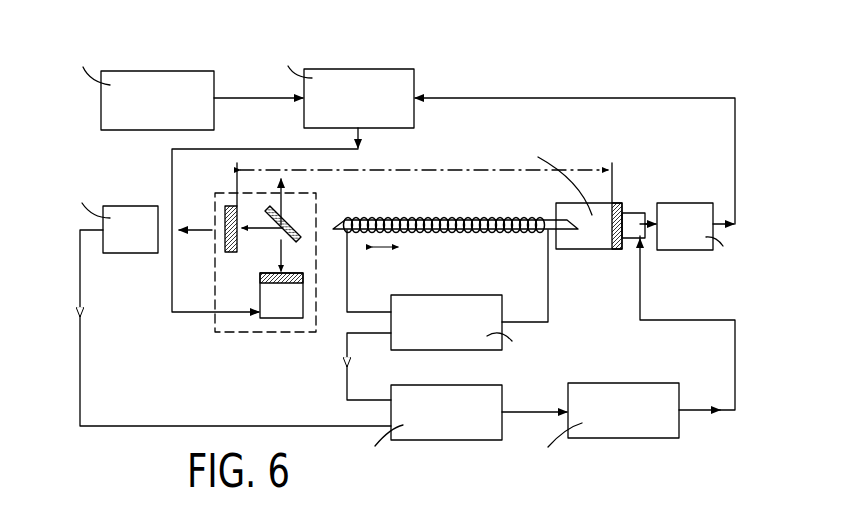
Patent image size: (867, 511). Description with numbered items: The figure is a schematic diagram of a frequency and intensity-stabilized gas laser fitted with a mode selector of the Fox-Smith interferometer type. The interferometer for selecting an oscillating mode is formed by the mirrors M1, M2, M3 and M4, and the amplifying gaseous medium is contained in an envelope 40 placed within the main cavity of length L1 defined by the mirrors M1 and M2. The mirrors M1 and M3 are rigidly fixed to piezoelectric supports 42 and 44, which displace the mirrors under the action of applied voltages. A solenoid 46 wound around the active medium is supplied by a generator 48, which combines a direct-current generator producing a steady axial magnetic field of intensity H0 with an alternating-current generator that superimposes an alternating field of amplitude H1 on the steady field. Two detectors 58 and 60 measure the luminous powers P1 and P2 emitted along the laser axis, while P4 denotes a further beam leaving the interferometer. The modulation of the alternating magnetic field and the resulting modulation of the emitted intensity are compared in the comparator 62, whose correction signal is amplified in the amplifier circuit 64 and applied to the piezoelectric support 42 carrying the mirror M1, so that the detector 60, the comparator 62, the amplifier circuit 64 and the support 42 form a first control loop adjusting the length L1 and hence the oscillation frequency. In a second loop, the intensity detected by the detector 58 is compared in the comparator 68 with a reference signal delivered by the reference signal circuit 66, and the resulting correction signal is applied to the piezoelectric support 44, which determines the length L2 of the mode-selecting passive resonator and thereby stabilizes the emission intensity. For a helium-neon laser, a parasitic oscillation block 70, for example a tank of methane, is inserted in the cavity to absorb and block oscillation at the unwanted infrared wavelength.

The reference signal circuit 66 is at (147, 110).
The comparator 68 is at (348, 108).
The detector 60 is at (141, 239).
The detector 58 is at (696, 236).
The generator 48 is at (435, 332).
The comparator 62 is at (435, 422).
The amplifier circuit 64 is at (612, 420).
The parasitic oscillation blocking element 70 is at (588, 240).
The piezoelectric support 42 is at (636, 216).
The envelope 40 is at (512, 232).
The solenoid 46 is at (468, 217).
The piezoelectric support 44 is at (283, 306).
The mirror M1 is at (620, 205).
The mirror M2 is at (230, 243).
The mirror M3 is at (292, 279).
The mirror M4 is at (300, 226).
The power P1 is at (645, 238).
The power P2 is at (195, 218).
The light beam P4 is at (292, 202).
The cavity length L1 is at (424, 184).
The length of the mode-selecting passive resonator L2 is at (262, 233).
The steady magnetic field intensity H0 is at (442, 232).
The alternating magnetic field amplitude H1 is at (386, 247).